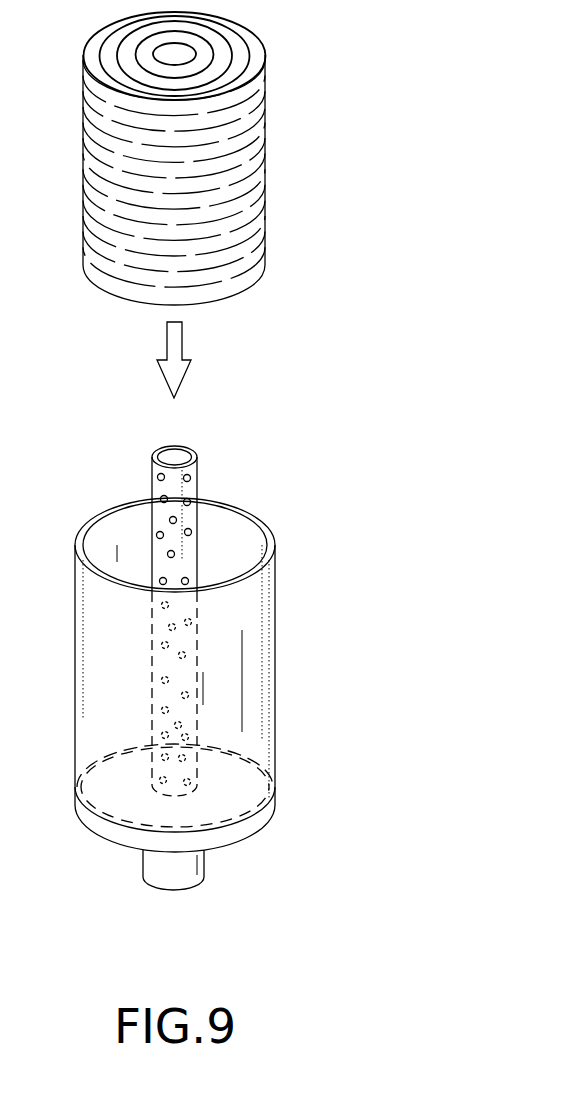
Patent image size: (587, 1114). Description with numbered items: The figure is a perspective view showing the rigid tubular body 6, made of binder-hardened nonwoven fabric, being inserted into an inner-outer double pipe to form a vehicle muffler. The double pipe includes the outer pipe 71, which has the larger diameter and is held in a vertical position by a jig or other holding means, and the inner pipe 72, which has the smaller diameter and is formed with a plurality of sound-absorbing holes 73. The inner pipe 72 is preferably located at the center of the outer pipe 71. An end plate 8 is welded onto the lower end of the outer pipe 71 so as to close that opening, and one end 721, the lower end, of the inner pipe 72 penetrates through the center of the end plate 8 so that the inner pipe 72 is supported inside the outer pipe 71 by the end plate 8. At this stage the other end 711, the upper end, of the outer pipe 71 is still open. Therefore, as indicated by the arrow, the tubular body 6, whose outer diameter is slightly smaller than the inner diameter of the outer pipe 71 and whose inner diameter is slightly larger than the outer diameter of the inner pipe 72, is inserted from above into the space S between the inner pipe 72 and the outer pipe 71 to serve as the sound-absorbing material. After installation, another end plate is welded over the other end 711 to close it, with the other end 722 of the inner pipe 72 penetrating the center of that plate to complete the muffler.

The tubular body 6 is at (255, 143).
The outer pipe 71 is at (252, 673).
The other end of the outer pipe 711 is at (247, 592).
The inner pipe 72 is at (177, 562).
The one end of the inner pipe 721 is at (183, 877).
The other end of the inner pipe 722 is at (183, 488).
The sound-absorbing holes 73 is at (157, 533).
The end plate 8 is at (252, 825).
The space S is at (107, 532).